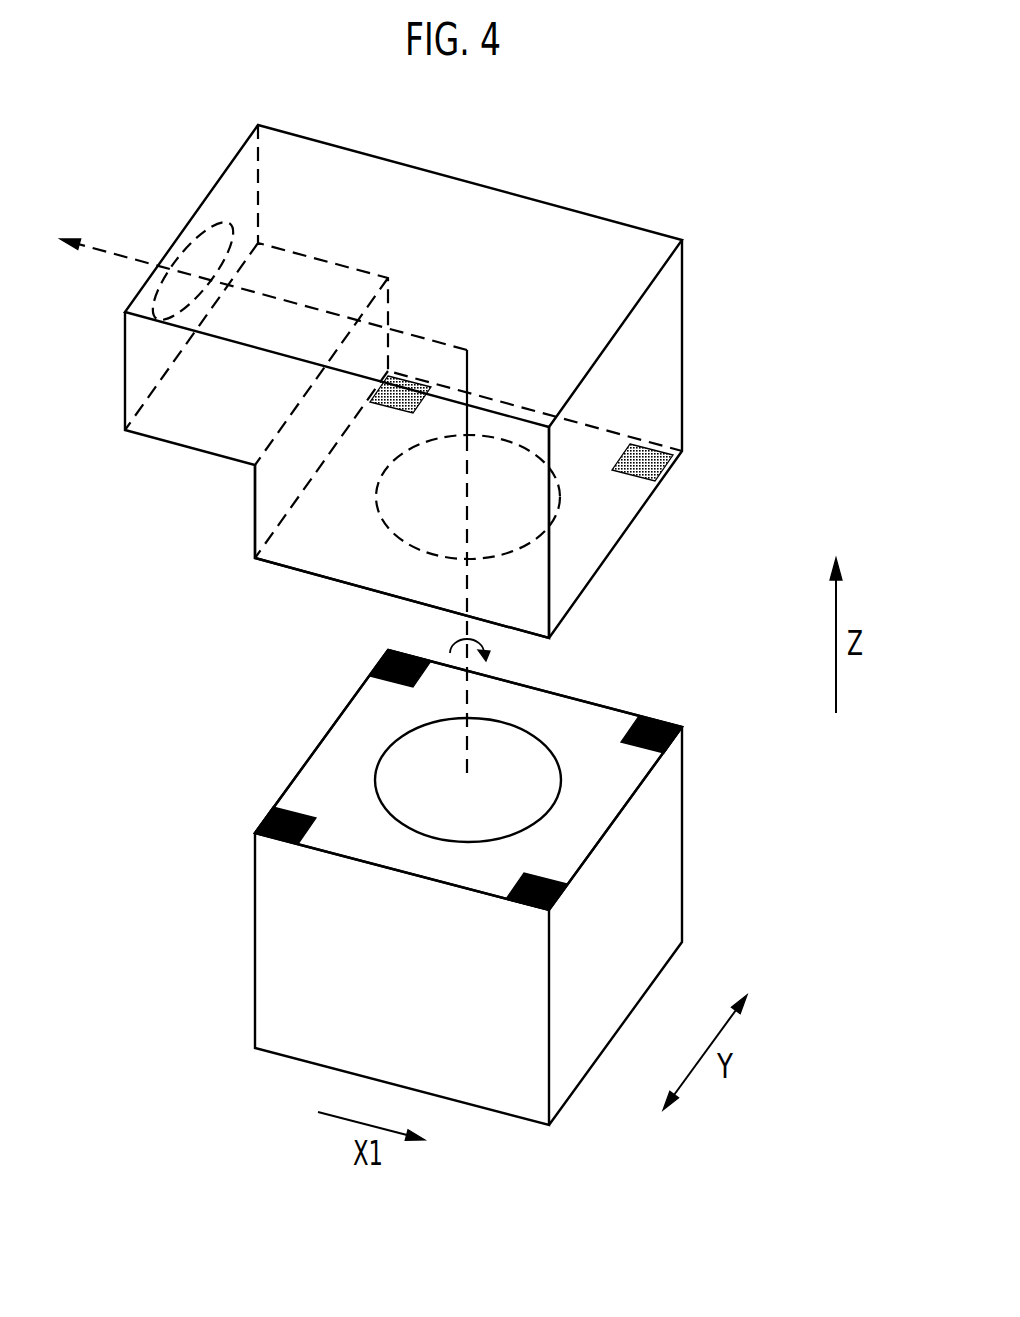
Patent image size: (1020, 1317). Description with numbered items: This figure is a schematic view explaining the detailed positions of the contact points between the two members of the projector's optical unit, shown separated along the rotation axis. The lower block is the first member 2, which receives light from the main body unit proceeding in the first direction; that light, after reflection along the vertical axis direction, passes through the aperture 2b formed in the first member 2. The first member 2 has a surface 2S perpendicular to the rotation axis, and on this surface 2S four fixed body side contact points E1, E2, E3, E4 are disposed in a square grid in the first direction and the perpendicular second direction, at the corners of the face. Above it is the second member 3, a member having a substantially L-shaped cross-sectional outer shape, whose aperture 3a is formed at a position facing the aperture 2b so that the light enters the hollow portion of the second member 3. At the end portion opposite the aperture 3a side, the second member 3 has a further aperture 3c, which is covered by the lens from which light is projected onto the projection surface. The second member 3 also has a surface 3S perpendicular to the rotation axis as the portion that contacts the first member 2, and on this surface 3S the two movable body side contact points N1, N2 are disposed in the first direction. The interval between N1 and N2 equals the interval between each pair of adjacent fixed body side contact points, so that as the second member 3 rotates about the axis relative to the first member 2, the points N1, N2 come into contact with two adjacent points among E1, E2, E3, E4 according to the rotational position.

The first member 2 is at (682, 882).
The surface 2S is at (588, 718).
The aperture 2b is at (527, 804).
The second member 3 is at (682, 310).
The surface 3S is at (297, 565).
The aperture 3a is at (525, 521).
The aperture 3c is at (225, 262).
The fixed body side contact point E1 is at (372, 673).
The fixed body side contact point E2 is at (657, 718).
The fixed body side contact point E3 is at (523, 910).
The fixed body side contact point E4 is at (293, 842).
The movable body side contact point N1 is at (405, 375).
The movable body side contact point N2 is at (678, 460).